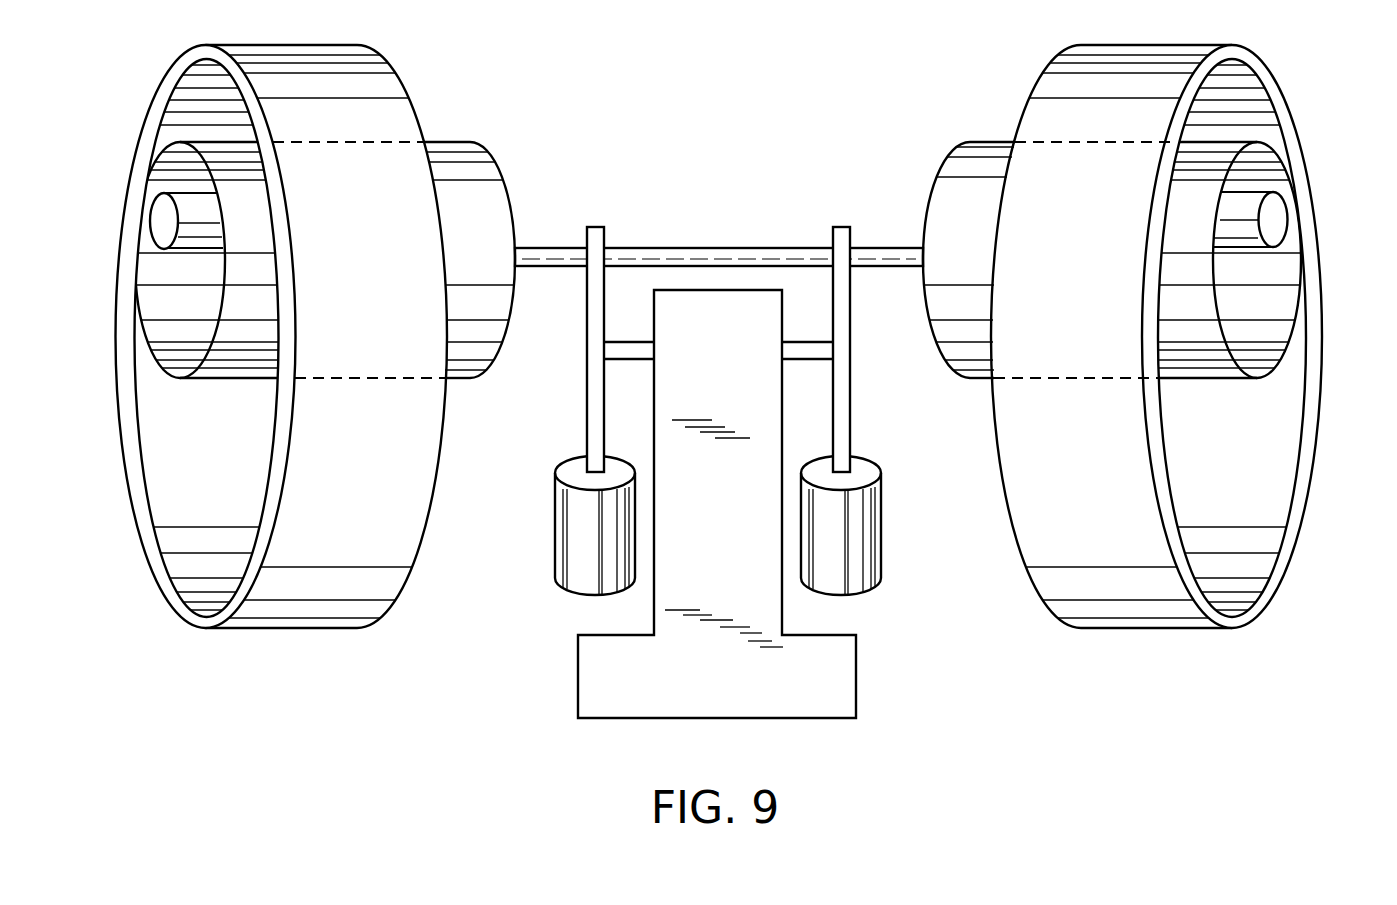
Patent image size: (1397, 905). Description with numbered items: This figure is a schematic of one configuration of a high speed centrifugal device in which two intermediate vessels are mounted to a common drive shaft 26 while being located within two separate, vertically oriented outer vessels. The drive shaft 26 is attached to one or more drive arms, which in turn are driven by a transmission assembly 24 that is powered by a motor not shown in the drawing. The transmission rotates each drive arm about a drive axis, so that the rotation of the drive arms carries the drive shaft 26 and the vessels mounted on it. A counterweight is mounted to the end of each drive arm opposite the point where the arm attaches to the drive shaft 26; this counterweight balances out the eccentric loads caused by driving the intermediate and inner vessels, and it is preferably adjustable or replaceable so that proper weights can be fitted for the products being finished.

The transmission assembly 24 is at (705, 465).
The drive shaft 26 is at (555, 250).